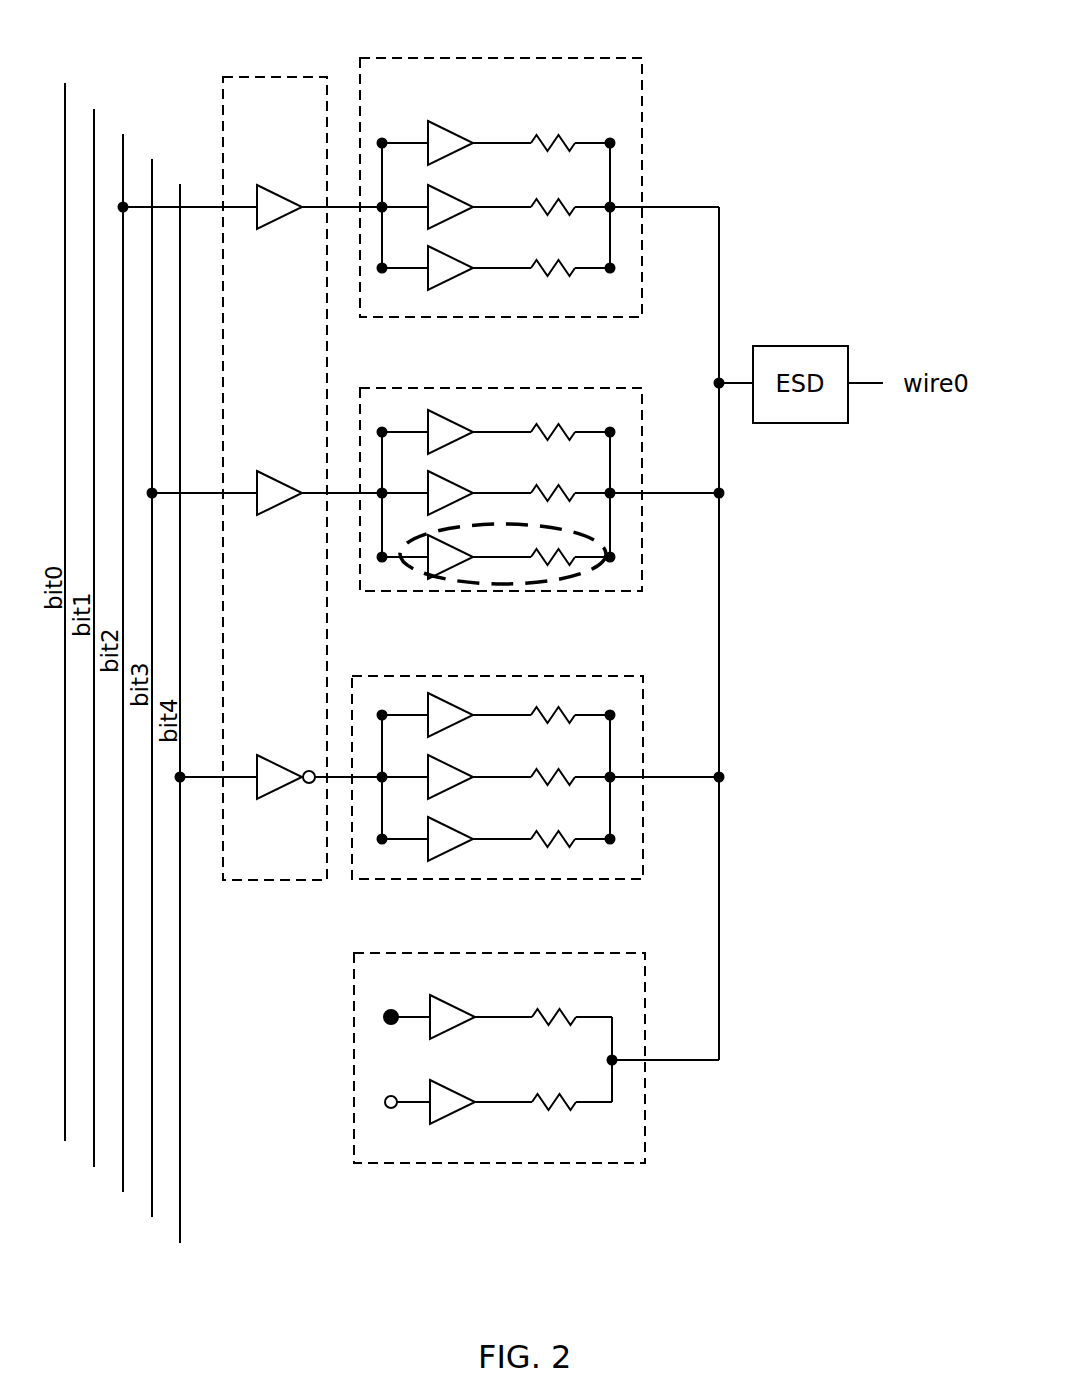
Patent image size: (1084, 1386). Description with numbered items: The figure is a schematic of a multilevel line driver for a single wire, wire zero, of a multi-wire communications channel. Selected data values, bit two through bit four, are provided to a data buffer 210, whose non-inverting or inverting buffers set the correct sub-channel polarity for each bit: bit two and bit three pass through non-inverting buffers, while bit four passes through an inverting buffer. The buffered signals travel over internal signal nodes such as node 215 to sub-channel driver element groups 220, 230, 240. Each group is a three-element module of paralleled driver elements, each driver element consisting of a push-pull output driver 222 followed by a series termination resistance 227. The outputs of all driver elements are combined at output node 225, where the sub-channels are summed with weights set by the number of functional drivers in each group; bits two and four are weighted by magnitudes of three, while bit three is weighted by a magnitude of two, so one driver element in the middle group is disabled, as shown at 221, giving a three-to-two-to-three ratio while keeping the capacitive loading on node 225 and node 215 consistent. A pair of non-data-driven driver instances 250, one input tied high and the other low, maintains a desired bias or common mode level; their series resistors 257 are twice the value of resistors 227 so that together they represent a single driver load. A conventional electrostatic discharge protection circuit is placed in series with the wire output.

The data buffer 210 is at (243, 77).
The internal signal node 215 is at (343, 207).
The sub-channel driver element group 220 is at (539, 169).
The disabled driver element 221 is at (548, 580).
The push-pull output driver 222 is at (428, 121).
The output node 225 is at (719, 296).
The series termination resistance 227 is at (533, 135).
The sub-channel driver element group 230 is at (541, 480).
The sub-channel driver element group 240 is at (598, 676).
The non-data-driven driver instances 250 is at (536, 1032).
The series resistors 257 is at (553, 1008).